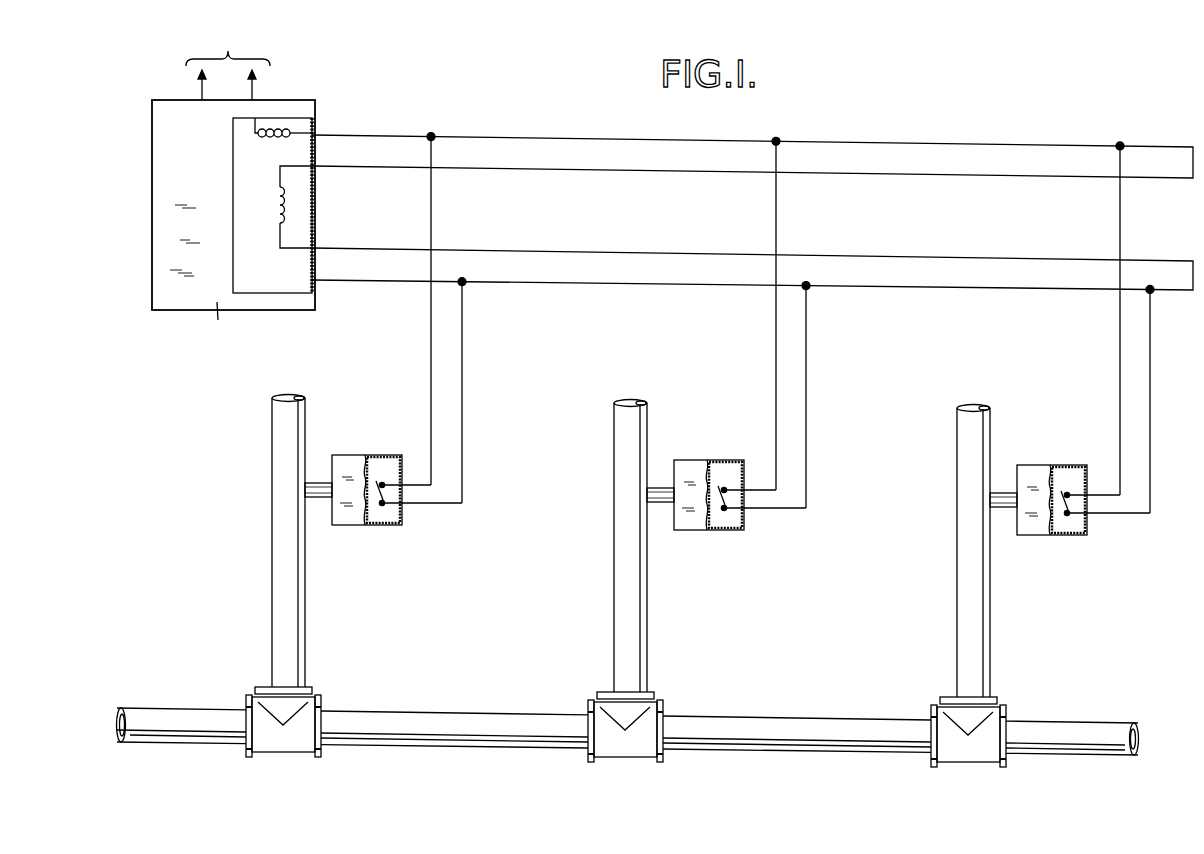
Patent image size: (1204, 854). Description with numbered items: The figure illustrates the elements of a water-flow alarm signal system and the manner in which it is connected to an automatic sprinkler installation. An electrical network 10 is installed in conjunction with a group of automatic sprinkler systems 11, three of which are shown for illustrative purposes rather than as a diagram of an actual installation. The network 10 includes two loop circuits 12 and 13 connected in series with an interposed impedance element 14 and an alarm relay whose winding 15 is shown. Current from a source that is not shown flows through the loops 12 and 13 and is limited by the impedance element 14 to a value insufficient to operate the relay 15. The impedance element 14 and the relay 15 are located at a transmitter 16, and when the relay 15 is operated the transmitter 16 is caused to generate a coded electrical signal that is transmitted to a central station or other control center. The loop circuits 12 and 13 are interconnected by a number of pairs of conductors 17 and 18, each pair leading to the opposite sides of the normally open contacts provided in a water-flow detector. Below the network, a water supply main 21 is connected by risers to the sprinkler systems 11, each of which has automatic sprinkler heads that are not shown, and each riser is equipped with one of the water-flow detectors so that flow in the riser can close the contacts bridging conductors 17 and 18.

The electrical network 10 is at (752, 211).
The automatic sprinkler system 11 is at (687, 581).
The loop circuit 12 is at (1022, 150).
The loop circuit 13 is at (973, 291).
The impedance element 14 is at (278, 207).
The alarm relay winding 15 is at (272, 143).
The transmitter 16 is at (207, 179).
The conductor 17 is at (429, 361).
The conductor 18 is at (464, 361).
The water supply main 21 is at (485, 712).